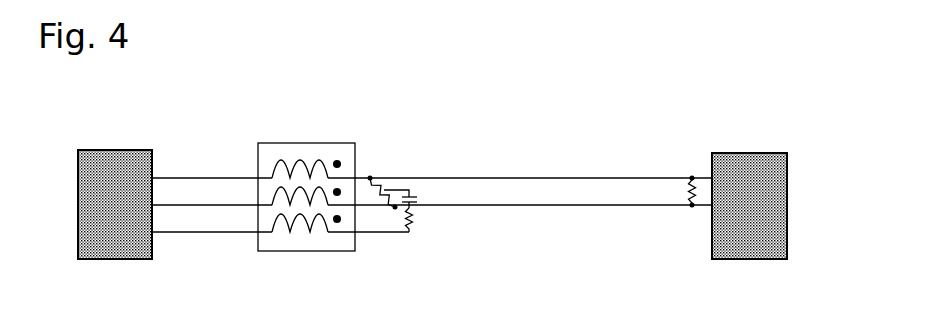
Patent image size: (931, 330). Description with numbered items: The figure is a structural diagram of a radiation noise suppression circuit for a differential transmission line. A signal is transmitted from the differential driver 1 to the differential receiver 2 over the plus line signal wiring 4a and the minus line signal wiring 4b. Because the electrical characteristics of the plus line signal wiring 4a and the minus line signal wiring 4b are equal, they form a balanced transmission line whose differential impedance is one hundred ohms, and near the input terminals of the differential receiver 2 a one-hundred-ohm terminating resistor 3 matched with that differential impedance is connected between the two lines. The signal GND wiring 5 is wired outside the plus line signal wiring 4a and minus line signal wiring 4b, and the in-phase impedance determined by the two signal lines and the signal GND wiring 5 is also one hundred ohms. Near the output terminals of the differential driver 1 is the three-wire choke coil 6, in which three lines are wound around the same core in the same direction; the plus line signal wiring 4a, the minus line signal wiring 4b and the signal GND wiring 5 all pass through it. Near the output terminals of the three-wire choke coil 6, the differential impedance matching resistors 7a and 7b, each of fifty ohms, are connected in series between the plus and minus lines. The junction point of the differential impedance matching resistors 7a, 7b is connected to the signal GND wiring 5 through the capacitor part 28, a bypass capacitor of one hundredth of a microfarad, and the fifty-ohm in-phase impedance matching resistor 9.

The differential driver 1 is at (113, 225).
The differential receiver 2 is at (731, 222).
The terminating resistor 3 is at (681, 193).
The plus line signal wiring 4a is at (160, 173).
The minus line signal wiring 4b is at (176, 200).
The signal GND wiring 5 is at (185, 234).
The three-wire choke coil 6 is at (330, 143).
The differential impedance matching resistor 7a is at (383, 183).
The differential impedance matching resistor 7b is at (382, 202).
The in-phase impedance matching resistor 9 is at (418, 224).
The capacitor part 28 is at (417, 198).